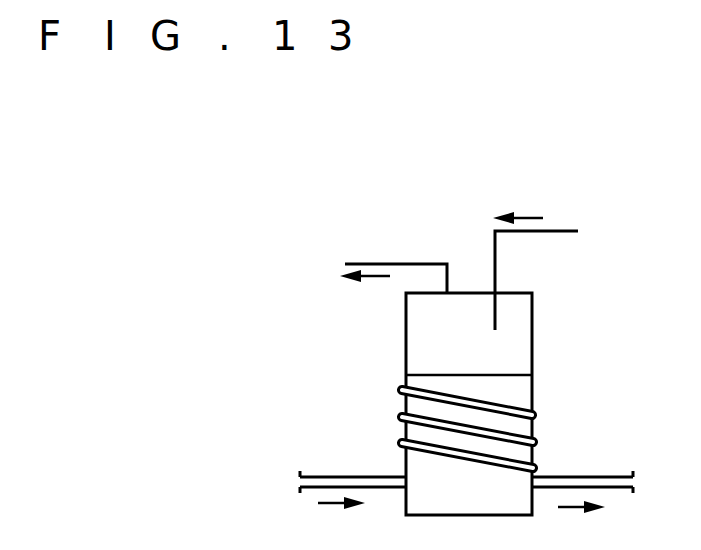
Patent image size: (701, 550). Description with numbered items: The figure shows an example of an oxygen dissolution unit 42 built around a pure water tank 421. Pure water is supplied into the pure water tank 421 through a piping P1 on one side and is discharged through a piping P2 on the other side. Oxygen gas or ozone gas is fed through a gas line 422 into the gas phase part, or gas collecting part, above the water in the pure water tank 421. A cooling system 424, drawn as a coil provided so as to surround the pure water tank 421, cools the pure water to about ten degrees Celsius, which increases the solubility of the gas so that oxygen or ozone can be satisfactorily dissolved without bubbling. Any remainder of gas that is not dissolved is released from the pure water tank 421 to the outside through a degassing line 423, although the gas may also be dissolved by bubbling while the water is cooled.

The oxygen dissolution unit 42 is at (471, 257).
The pure water tank 421 is at (532, 337).
The gas line 422 is at (565, 231).
The degassing line 423 is at (388, 263).
The cooling system 424 is at (536, 414).
The piping P1 is at (346, 476).
The piping P2 is at (604, 477).